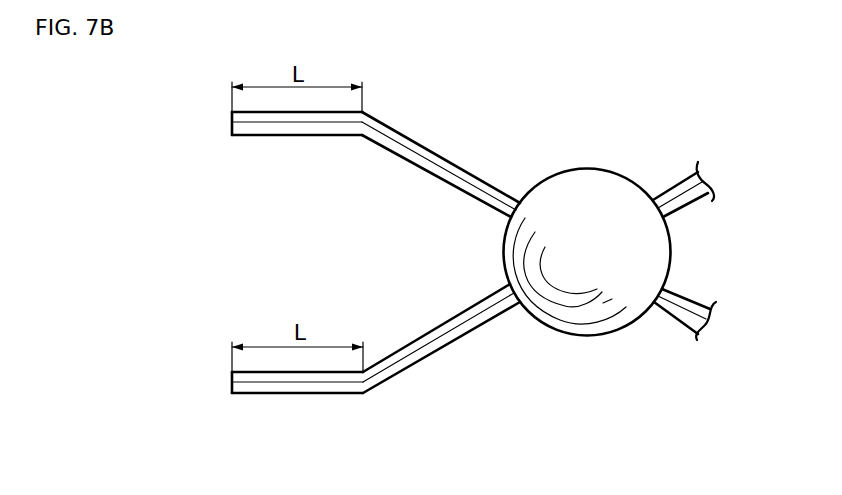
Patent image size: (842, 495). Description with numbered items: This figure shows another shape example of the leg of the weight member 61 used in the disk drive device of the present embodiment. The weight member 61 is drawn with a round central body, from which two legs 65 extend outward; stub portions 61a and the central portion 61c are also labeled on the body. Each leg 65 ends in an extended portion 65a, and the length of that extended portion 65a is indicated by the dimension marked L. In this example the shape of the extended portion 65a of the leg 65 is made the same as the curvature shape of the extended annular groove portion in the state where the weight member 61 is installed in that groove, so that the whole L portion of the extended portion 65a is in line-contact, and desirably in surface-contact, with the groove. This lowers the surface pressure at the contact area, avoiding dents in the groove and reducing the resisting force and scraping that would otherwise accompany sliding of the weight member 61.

The weight member 61 is at (518, 248).
The arm portion 61a is at (462, 160).
The round central portion 61c is at (585, 204).
The leg 65 is at (376, 264).
The extended portion 65a is at (300, 128).